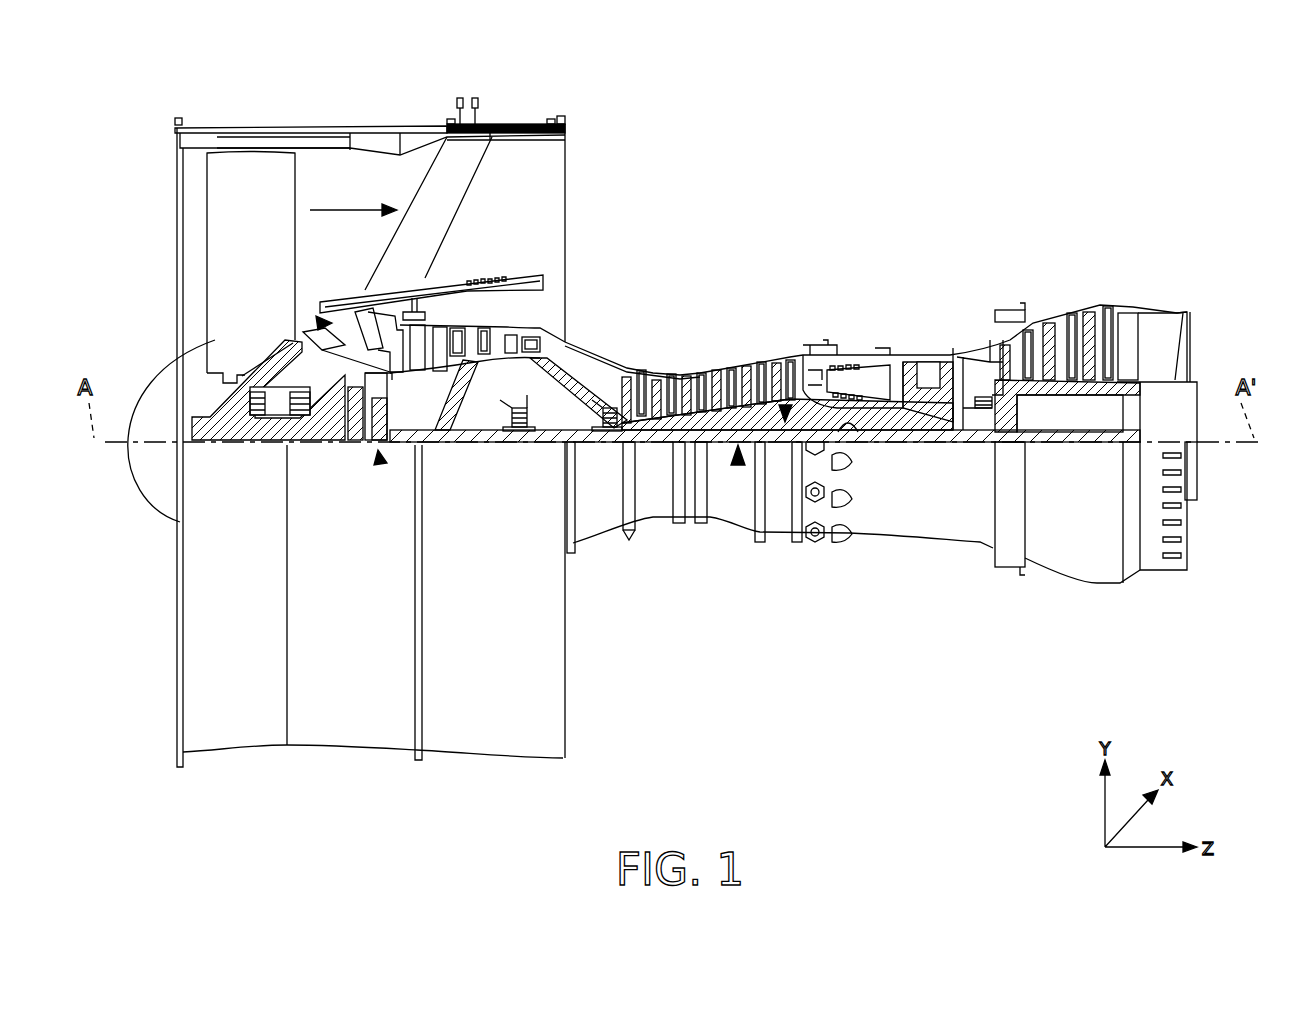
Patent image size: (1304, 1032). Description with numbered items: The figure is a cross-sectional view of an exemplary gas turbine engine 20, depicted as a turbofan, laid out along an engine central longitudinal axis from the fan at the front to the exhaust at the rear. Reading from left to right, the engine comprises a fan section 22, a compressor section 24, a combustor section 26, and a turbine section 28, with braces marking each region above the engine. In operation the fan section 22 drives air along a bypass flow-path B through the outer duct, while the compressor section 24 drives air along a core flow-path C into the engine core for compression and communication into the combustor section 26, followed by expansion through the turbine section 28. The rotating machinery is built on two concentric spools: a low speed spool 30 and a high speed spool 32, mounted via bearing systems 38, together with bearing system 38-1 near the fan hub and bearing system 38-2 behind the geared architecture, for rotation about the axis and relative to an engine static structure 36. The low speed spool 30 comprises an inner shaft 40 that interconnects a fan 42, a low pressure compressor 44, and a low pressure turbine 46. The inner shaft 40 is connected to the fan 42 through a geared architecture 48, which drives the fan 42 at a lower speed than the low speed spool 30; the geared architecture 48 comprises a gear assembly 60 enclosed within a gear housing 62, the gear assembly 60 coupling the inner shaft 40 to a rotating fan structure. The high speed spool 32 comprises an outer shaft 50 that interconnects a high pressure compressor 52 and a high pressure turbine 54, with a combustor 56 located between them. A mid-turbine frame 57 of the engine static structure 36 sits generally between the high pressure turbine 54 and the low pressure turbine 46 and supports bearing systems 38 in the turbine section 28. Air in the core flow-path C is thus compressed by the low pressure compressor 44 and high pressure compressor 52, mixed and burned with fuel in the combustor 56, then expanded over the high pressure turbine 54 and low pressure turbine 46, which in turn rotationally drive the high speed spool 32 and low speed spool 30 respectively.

The gas turbine engine 20 is at (910, 155).
The fan section 22 is at (415, 105).
The compressor section 24 is at (425, 240).
The combustor section 26 is at (803, 240).
The turbine section 28 is at (1128, 240).
The low speed spool 30 is at (738, 462).
The high speed spool 32 is at (785, 408).
The engine static structure 36 is at (938, 520).
The bearing system 38 is at (963, 425).
The bearing system 38-1 is at (262, 415).
The bearing system 38-2 is at (517, 418).
The inner shaft 40 is at (587, 442).
The fan 42 is at (233, 259).
The low pressure compressor 44 is at (497, 348).
The low pressure turbine 46 is at (1062, 325).
The geared architecture 48 is at (381, 452).
The outer shaft 50 is at (847, 424).
The high pressure compressor 52 is at (707, 373).
The high pressure turbine 54 is at (917, 362).
The combustor 56 is at (850, 378).
The mid-turbine frame 57 is at (963, 355).
The gear assembly 60 is at (387, 418).
The gear housing 62 is at (382, 383).
The bypass flow-path B is at (340, 212).
The core flow-path C is at (318, 322).